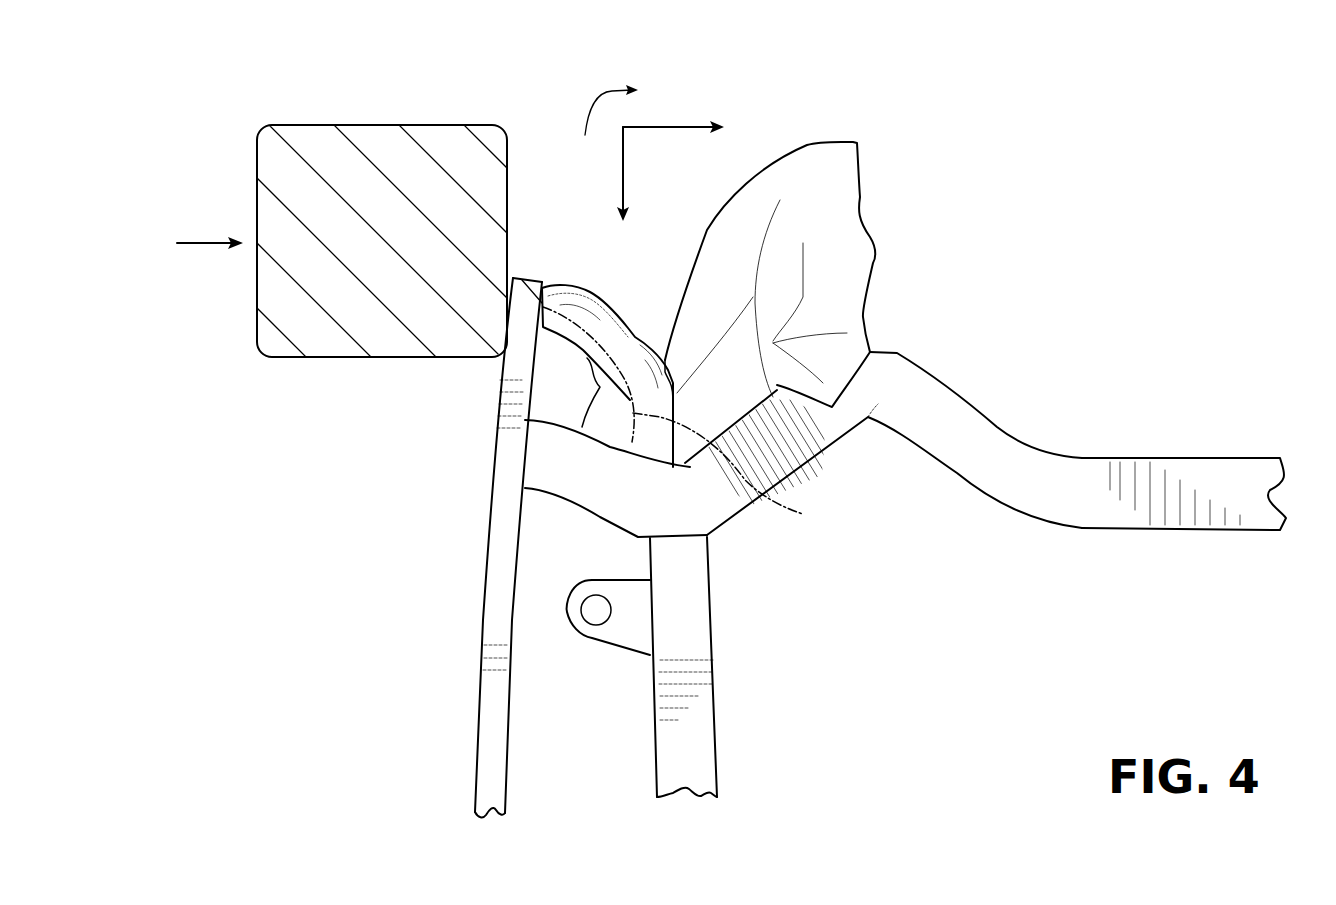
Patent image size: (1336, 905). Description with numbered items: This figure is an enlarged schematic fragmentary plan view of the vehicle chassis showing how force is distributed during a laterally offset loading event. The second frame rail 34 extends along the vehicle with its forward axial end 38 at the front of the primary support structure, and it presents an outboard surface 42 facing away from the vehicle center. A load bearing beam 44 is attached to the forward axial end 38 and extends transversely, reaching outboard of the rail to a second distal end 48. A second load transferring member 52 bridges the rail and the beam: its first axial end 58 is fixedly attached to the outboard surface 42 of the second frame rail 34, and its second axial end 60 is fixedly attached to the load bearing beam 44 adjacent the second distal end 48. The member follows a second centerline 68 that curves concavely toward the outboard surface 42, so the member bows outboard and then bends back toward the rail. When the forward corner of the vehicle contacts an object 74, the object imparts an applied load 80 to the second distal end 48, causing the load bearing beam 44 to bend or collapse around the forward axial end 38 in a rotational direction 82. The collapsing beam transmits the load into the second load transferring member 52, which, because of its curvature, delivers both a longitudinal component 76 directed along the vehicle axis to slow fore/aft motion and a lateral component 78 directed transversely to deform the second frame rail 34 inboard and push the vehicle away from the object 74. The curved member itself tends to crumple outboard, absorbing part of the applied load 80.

The second frame rail 34 is at (1088, 520).
The forward axial end 38 is at (525, 452).
The outboard surface 42 is at (957, 390).
The load bearing beam 44 is at (478, 716).
The second distal end 48 is at (535, 280).
The second load transferring member 52 is at (641, 329).
The first axial end 58 is at (632, 442).
The second axial end 60 is at (518, 278).
The second centerline 68 is at (803, 514).
The object 74 is at (277, 345).
The longitudinal component 76 is at (665, 124).
The lateral component 78 is at (625, 167).
The applied load 80 is at (213, 238).
The rotational direction 82 is at (606, 88).